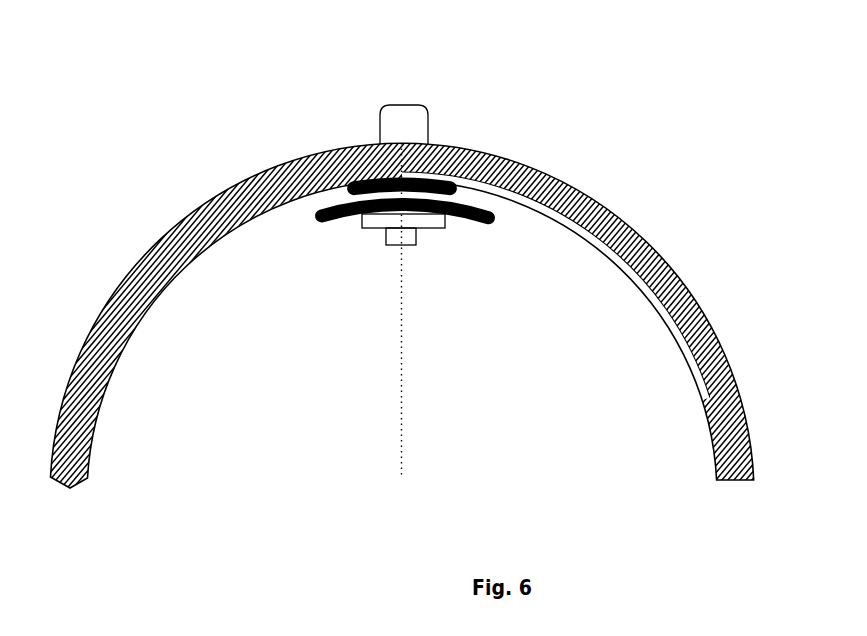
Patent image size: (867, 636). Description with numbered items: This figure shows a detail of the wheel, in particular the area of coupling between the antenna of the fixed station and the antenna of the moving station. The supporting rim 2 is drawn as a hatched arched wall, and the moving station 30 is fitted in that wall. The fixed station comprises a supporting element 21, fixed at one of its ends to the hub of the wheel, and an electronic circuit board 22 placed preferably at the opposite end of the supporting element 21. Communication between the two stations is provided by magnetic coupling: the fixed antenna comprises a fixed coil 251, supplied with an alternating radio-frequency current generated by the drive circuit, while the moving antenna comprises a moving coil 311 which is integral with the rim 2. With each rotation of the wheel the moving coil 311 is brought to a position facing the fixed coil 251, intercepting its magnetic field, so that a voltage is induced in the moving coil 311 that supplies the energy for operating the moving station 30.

The supporting rim 2 is at (198, 223).
The moving station 30 is at (407, 125).
The moving coil 311 is at (458, 185).
The fixed coil 251 is at (318, 225).
The electronic circuit board 22 is at (433, 220).
The supporting element 21 is at (400, 235).